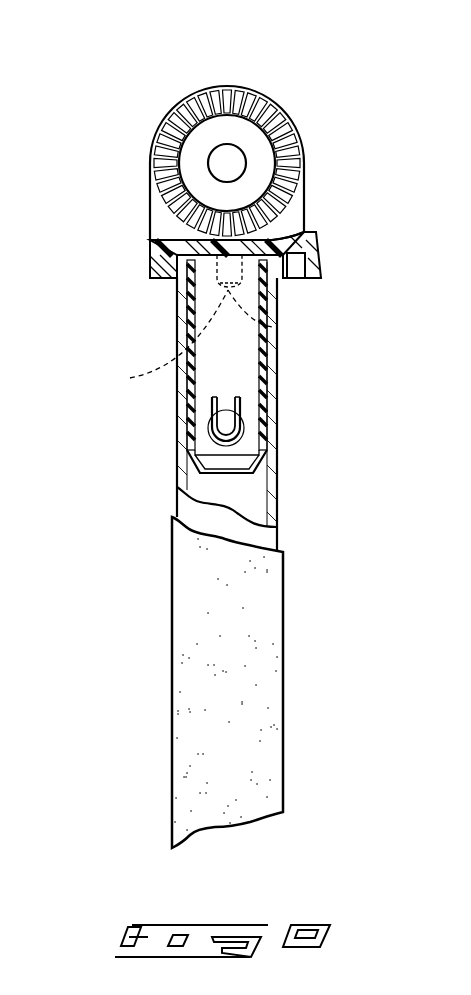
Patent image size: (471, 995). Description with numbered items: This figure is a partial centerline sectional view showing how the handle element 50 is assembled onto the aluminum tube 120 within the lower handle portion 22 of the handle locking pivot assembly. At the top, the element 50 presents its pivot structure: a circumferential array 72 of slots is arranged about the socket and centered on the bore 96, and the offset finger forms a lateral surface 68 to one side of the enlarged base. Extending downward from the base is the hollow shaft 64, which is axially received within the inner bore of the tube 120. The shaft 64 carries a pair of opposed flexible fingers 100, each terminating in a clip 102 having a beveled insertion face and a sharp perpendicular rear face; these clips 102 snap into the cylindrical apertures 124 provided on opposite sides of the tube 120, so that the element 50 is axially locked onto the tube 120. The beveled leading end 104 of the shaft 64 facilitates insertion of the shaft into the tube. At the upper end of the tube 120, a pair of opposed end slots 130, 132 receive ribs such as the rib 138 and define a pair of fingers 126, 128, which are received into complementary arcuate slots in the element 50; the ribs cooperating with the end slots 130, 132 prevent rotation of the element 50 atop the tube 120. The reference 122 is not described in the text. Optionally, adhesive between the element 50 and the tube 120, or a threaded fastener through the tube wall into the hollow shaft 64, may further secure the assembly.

The circumferential array 72 is at (262, 88).
The bore 96 is at (242, 151).
The element 50 is at (330, 257).
The lateral surface 68 is at (173, 240).
The finger 128 is at (177, 268).
The finger 126 is at (277, 278).
The rib 138 is at (270, 325).
The end slot 130 is at (123, 343).
The end slot 132 is at (250, 308).
The hollow shaft 64 is at (279, 372).
The cylindrical aperture 124 is at (197, 472).
The beveled leading end 104 is at (253, 470).
The flexible finger 100 is at (244, 400).
The clip 102 is at (244, 430).
The aluminum tube 120 is at (273, 513).
The lower handle portion 22 is at (286, 608).
The handle grip surface 122 is at (283, 687).